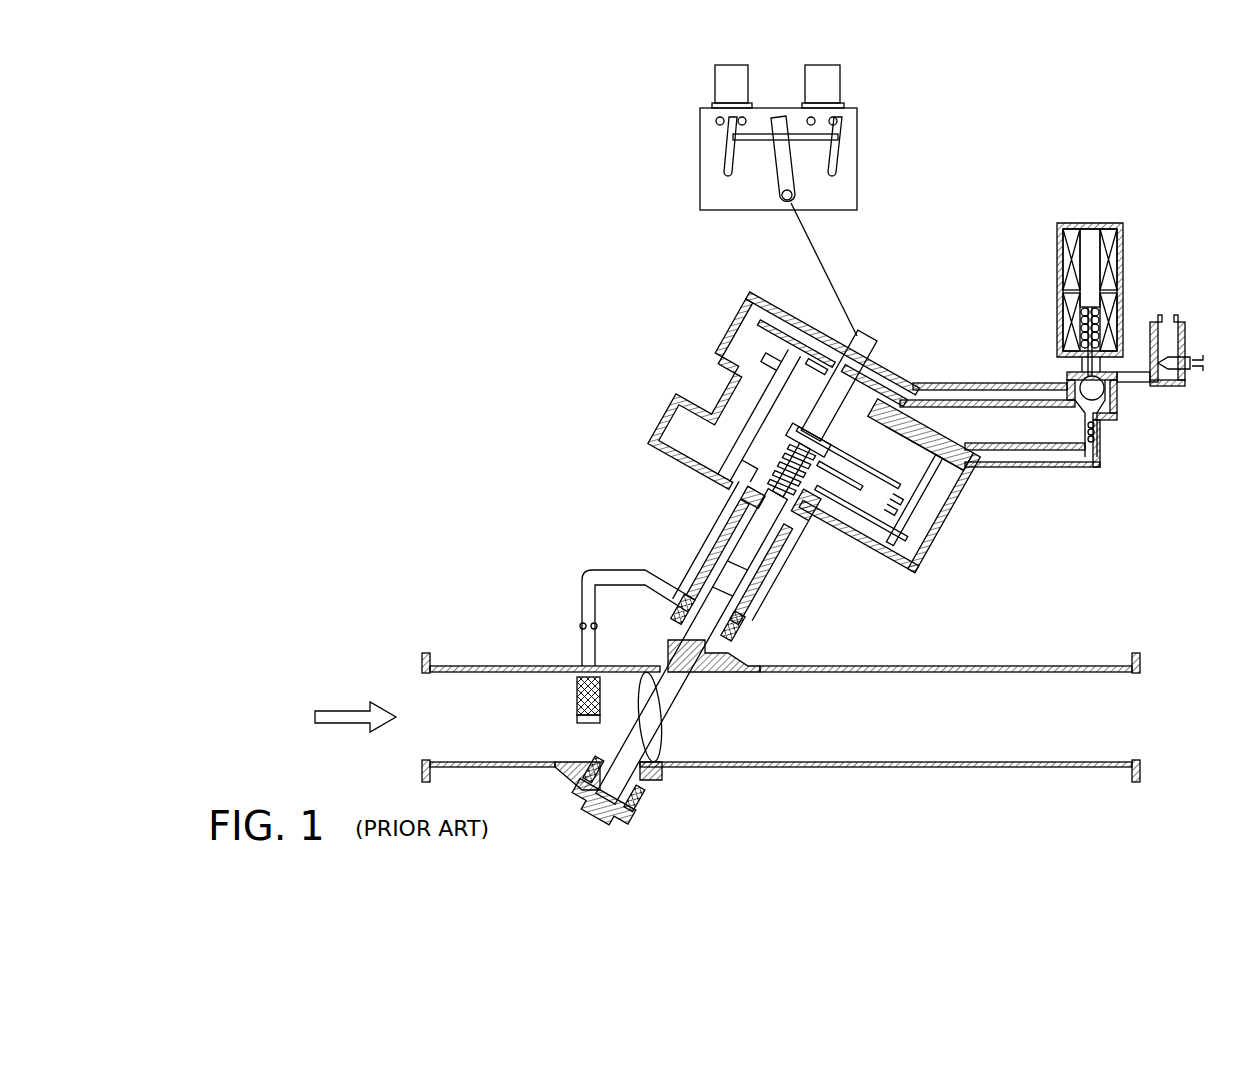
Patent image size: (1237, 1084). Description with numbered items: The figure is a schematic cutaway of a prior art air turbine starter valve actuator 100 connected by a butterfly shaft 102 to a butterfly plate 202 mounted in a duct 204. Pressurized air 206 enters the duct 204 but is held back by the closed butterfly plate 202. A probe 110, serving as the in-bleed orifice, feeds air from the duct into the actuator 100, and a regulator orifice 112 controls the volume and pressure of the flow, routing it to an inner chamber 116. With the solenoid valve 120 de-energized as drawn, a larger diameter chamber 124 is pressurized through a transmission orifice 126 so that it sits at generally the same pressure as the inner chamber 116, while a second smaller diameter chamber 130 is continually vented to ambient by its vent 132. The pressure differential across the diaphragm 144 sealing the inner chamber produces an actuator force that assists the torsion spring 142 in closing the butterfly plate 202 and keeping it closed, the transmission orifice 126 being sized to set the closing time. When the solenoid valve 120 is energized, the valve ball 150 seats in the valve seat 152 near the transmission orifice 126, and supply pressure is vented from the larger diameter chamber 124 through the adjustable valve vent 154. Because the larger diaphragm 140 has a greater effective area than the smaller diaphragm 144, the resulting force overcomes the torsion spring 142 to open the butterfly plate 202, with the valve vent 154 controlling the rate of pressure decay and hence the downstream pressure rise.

The air turbine starter valve actuator 100 is at (580, 310).
The butterfly shaft 102 is at (735, 627).
The probe 110 is at (575, 706).
The regulator orifice 112 is at (583, 638).
The inner chamber 116 is at (895, 465).
The solenoid valve 120 is at (1125, 240).
The larger diameter chamber 124 is at (690, 445).
The transmission orifice 126 is at (1098, 448).
The second smaller diameter chamber 130 is at (932, 512).
The vent 132 is at (932, 560).
The larger diaphragm 140 is at (785, 340).
The torsion spring 142 is at (808, 505).
The diaphragm 144 is at (950, 465).
The valve ball 150 is at (1100, 390).
The valve seat 152 is at (1098, 423).
The valve vent 154 is at (1160, 320).
The butterfly plate 202 is at (660, 745).
The duct 204 is at (1062, 711).
The pressurized air 206 is at (375, 705).